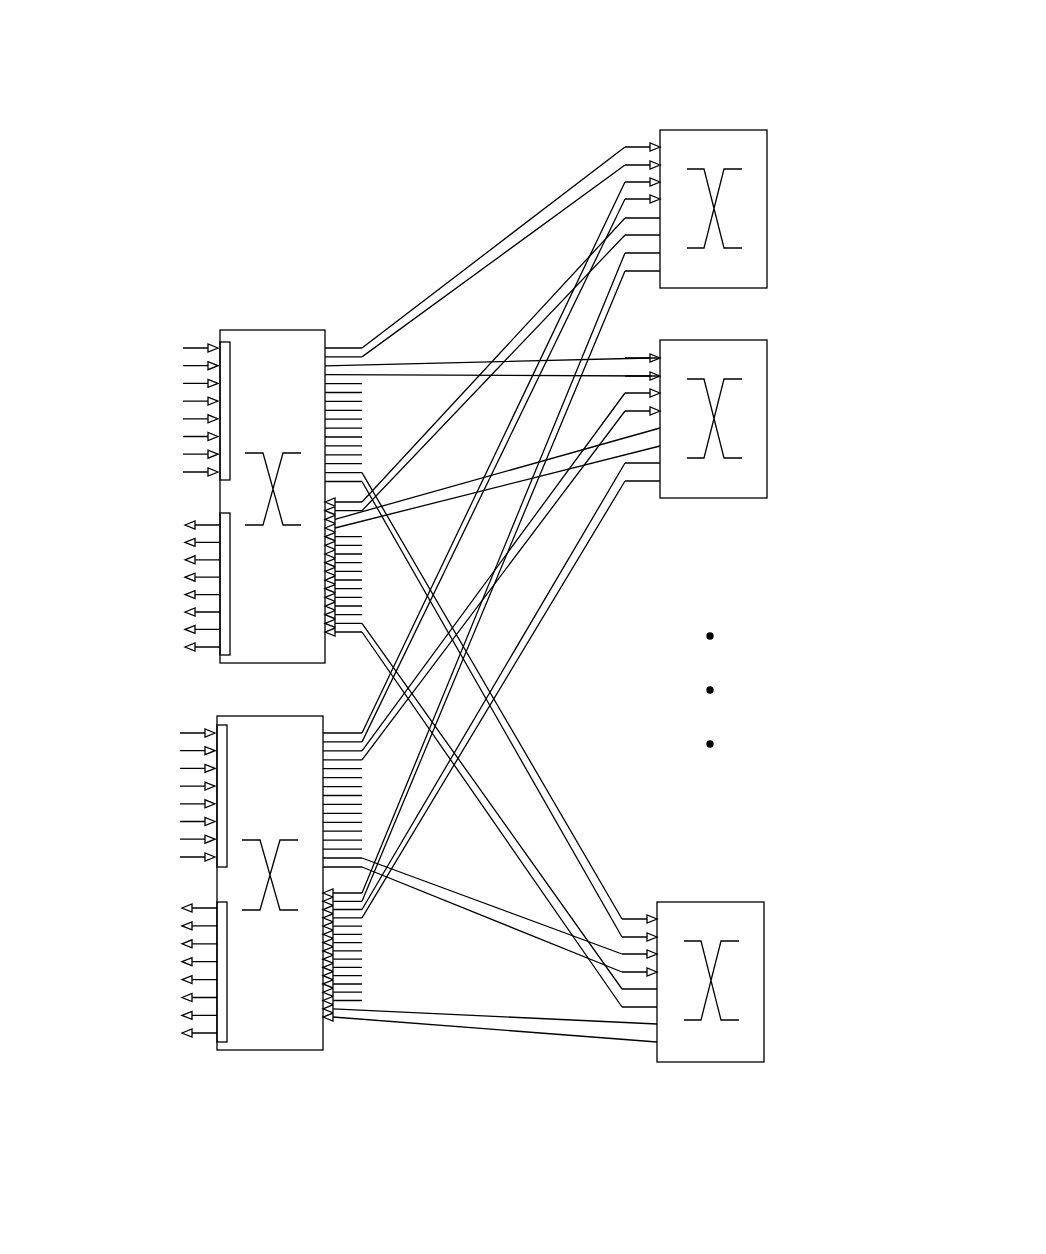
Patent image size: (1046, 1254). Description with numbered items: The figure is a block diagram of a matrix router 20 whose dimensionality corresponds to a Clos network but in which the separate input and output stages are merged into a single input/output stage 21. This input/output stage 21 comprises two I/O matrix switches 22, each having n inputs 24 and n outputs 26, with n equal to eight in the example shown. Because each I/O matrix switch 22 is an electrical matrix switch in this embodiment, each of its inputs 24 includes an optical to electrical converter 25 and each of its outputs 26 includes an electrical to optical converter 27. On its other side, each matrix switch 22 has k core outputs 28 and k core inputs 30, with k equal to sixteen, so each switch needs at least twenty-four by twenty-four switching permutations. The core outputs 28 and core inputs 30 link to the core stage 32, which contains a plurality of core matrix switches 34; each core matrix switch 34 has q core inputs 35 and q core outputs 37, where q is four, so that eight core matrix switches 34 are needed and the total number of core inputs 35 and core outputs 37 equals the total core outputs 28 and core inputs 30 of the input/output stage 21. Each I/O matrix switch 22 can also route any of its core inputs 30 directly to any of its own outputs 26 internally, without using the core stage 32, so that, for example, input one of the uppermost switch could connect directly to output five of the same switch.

The matrix router 20 is at (292, 82).
The input/output stage 21 is at (307, 218).
The matrix switch 22 is at (255, 330).
The inputs 24 is at (140, 350).
The optical to electrical (O/E) converter 25 is at (230, 423).
The outputs 26 is at (140, 525).
The electrical to optical (E/O) converter 27 is at (230, 557).
The core outputs 28 is at (345, 313).
The core inputs 30 is at (342, 662).
The core stage 32 is at (742, 58).
The core matrix switch 34 is at (767, 190).
The core inputs 35 is at (645, 118).
The core outputs 37 is at (645, 284).